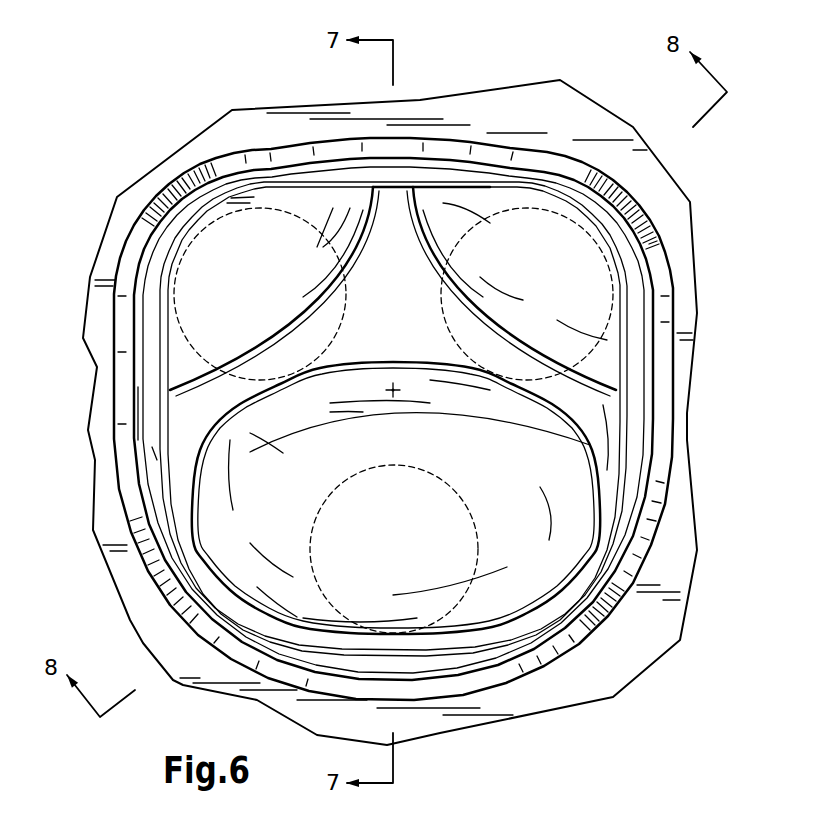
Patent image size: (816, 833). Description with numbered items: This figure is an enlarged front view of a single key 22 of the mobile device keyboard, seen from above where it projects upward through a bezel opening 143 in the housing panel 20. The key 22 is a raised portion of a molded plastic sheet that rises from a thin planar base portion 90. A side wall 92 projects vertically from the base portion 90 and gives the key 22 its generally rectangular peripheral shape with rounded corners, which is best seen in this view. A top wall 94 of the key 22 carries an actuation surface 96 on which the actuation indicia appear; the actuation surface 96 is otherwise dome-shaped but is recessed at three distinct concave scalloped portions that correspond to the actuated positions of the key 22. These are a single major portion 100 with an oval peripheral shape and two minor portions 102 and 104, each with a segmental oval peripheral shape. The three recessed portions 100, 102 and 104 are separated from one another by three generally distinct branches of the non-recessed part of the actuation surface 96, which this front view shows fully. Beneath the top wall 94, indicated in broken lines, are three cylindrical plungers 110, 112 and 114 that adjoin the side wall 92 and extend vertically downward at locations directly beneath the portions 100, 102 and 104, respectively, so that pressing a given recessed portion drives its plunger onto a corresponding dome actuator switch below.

The housing panel 20 is at (208, 145).
The key 22 is at (165, 317).
The base portion 90 is at (458, 177).
The side wall 92 is at (498, 197).
The top wall 94 is at (595, 422).
The actuation surface 96 is at (217, 400).
The major portion 100 is at (277, 490).
The minor portion 102 is at (203, 270).
The minor portion 104 is at (582, 290).
The plunger 110 is at (317, 587).
The plunger 112 is at (190, 352).
The plunger 114 is at (593, 343).
The bezel opening 143 is at (273, 147).